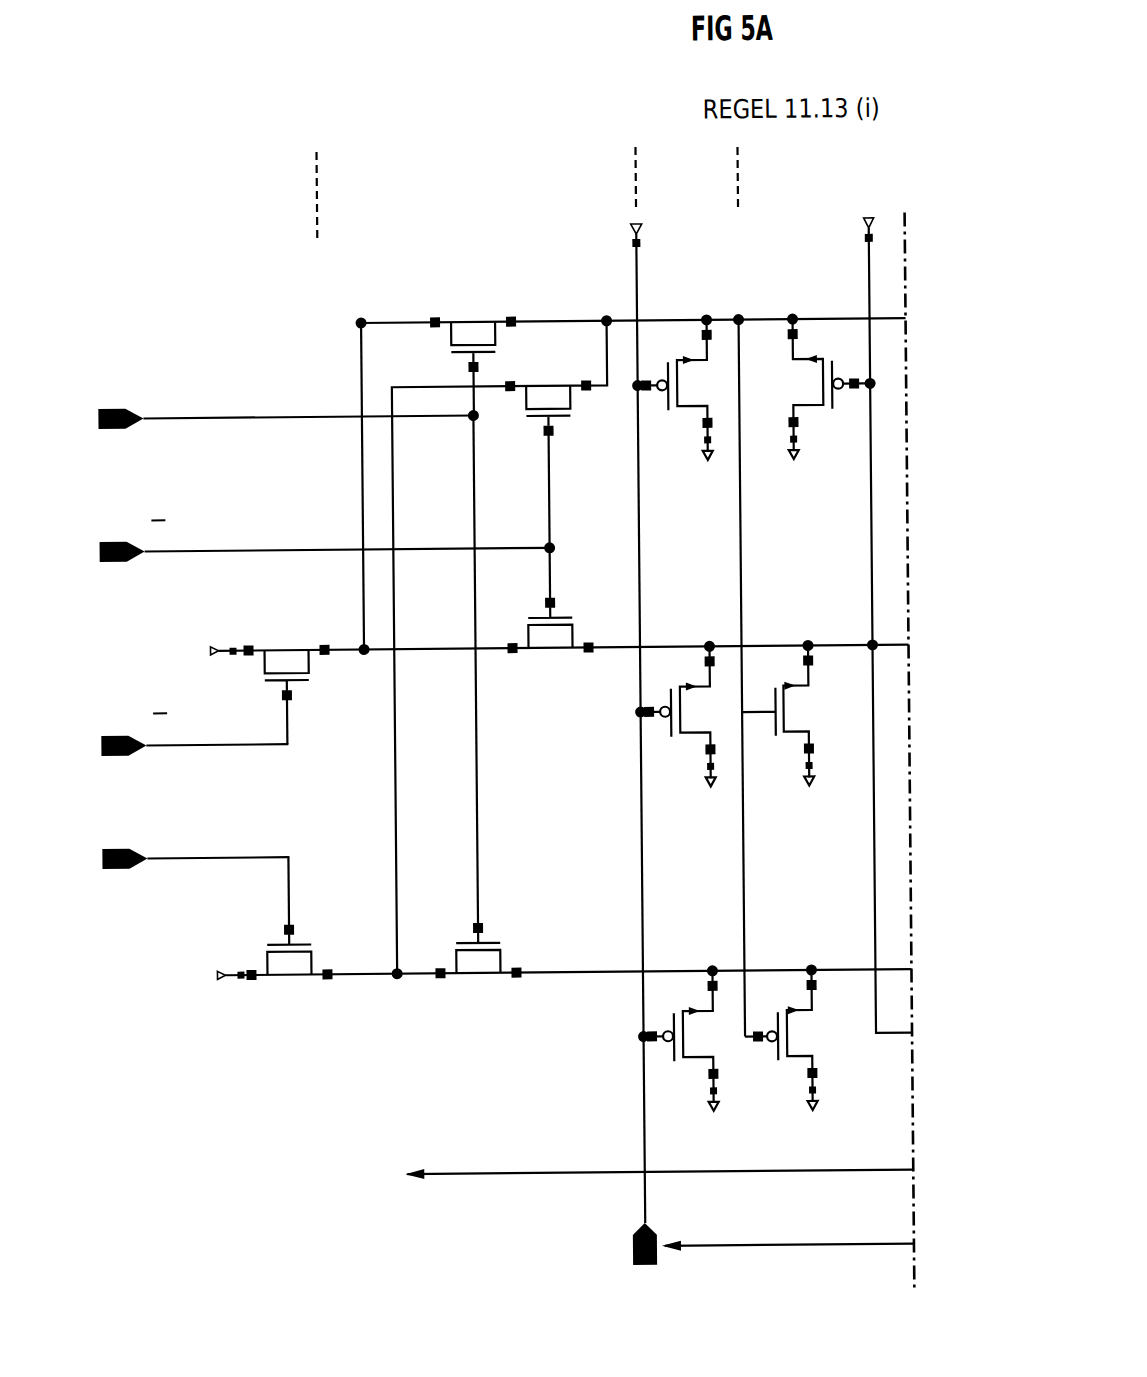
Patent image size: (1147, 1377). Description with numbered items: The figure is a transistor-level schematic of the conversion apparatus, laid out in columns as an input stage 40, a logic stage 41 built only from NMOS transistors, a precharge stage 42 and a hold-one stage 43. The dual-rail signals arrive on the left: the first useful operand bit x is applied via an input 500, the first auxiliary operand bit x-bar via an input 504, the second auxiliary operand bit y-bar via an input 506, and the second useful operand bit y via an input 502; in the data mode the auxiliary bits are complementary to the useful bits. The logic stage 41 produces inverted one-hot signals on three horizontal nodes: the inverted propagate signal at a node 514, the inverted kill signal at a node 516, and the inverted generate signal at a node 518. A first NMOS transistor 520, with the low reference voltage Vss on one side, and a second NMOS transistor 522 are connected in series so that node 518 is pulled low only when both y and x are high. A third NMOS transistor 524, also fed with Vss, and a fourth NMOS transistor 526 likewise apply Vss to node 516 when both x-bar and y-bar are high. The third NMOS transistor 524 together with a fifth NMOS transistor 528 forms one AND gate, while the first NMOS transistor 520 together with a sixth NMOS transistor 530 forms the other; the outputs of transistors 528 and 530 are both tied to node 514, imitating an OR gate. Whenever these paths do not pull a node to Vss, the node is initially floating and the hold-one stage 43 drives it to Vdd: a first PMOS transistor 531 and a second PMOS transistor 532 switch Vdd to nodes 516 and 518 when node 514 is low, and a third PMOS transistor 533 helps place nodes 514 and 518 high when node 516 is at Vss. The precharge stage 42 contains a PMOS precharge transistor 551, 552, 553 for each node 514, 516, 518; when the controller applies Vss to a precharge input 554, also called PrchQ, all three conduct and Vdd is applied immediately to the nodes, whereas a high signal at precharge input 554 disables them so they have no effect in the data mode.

The input stage 40 is at (328, 600).
The logic stage 41 is at (483, 603).
The precharge stage 42 is at (633, 734).
The hold-"1" stage 43 is at (835, 724).
The input 500 is at (116, 405).
The input 504 is at (113, 538).
The input 506 is at (113, 732).
The input 502 is at (113, 846).
The node 514 is at (775, 318).
The node 516 is at (771, 643).
The node 518 is at (775, 969).
The first NMOS transistor 520 is at (288, 958).
The second NMOS transistor 522 is at (478, 958).
The third NMOS transistor 524 is at (289, 665).
The fourth NMOS transistor 526 is at (554, 632).
The fifth NMOS transistor 528 is at (474, 336).
The sixth NMOS transistor 530 is at (548, 399).
The first PMOS transistor 531 is at (788, 714).
The second PMOS transistor 532 is at (789, 1037).
The third PMOS transistor 533 is at (816, 384).
The precharge transistor 551 is at (683, 412).
The precharge transistor 552 is at (680, 738).
The precharge transistor 553 is at (677, 1064).
The precharge input 554 is at (628, 1250).